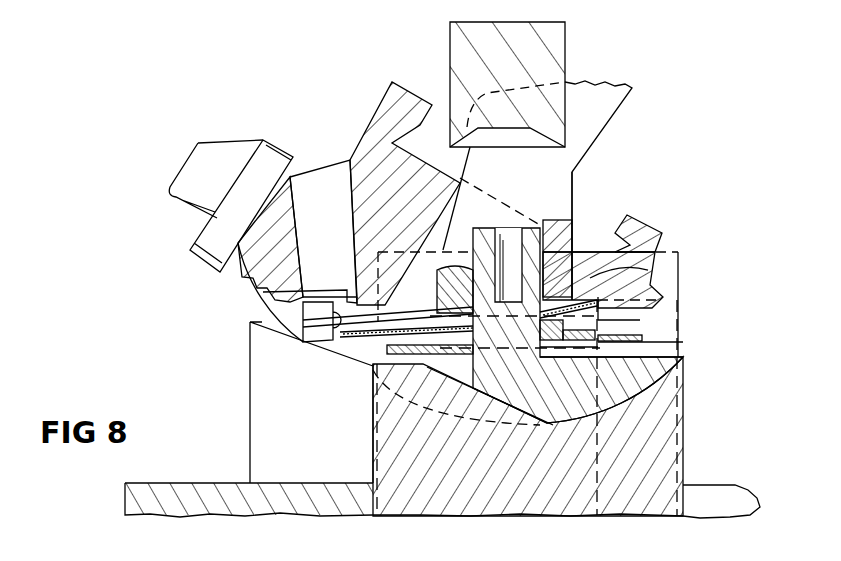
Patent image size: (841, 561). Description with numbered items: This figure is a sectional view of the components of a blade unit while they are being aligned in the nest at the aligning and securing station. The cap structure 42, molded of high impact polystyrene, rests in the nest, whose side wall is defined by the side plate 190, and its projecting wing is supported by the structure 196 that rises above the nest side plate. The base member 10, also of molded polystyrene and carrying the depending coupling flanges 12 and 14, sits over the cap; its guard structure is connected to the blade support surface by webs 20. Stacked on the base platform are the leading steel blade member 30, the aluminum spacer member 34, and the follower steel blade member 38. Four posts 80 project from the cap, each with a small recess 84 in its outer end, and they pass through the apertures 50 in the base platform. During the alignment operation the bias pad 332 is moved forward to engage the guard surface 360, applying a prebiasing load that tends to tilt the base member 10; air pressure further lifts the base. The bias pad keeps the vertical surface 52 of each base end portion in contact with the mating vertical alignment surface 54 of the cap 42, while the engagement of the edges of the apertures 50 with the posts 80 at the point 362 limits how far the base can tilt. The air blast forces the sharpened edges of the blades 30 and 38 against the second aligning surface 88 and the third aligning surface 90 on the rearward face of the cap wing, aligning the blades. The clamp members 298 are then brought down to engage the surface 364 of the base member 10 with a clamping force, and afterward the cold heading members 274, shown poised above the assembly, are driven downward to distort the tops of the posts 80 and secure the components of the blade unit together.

The base member 10 is at (593, 248).
The flange 12 is at (420, 90).
The flange 14 is at (628, 215).
The web 20 is at (325, 175).
The leading steel blade member 30 is at (643, 278).
The aluminum spacer member 34 is at (598, 320).
The follower steel blade member 38 is at (642, 337).
The cap structure 42 is at (645, 353).
The aperture 50 is at (470, 267).
The vertical surface 52 is at (267, 287).
The vertical alignment surface 54 is at (303, 317).
The post 80 is at (473, 237).
The recess 84 is at (500, 240).
The second aligning surface 88 is at (330, 340).
The third aligning surface 90 is at (387, 345).
The side plate 190 is at (683, 408).
The wing support structure 196 is at (249, 400).
The cold heading member 274 is at (567, 58).
The clamp member 298 is at (612, 120).
The bias pad 332 is at (277, 140).
The guard surface 360 is at (220, 234).
The contact point 362 is at (553, 253).
The base clamping surface 364 is at (583, 245).